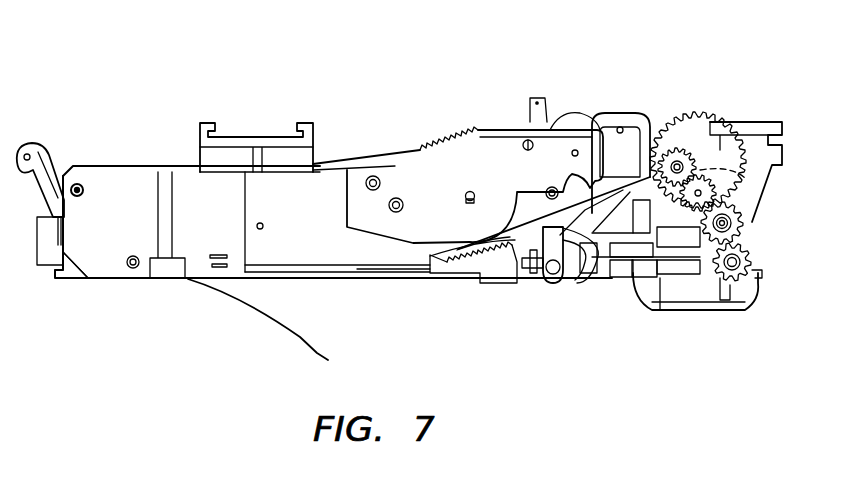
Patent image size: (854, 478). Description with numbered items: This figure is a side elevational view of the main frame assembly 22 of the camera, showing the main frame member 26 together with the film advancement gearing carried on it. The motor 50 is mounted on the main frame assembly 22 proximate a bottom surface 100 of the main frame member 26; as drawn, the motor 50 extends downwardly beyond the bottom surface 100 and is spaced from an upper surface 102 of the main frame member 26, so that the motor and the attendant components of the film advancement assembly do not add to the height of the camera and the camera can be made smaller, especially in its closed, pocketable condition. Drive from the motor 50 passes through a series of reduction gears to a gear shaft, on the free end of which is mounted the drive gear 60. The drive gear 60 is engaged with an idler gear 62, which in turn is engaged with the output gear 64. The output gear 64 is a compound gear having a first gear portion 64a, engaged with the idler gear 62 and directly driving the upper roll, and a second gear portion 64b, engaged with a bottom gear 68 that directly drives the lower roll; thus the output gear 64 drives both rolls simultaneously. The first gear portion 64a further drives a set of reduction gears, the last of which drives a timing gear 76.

The main frame assembly 22 is at (108, 63).
The main frame member 26 is at (100, 250).
The motor 50 is at (760, 300).
The drive gear 60 is at (765, 258).
The idler gear 62 is at (745, 225).
The output gear 64 is at (684, 125).
The first gear portion 64a is at (655, 122).
The second gear portion 64b is at (688, 165).
The bottom gear 68 is at (745, 178).
The timing gear 76 is at (448, 147).
The bottom surface 100 is at (447, 273).
The upper surface 102 is at (330, 150).